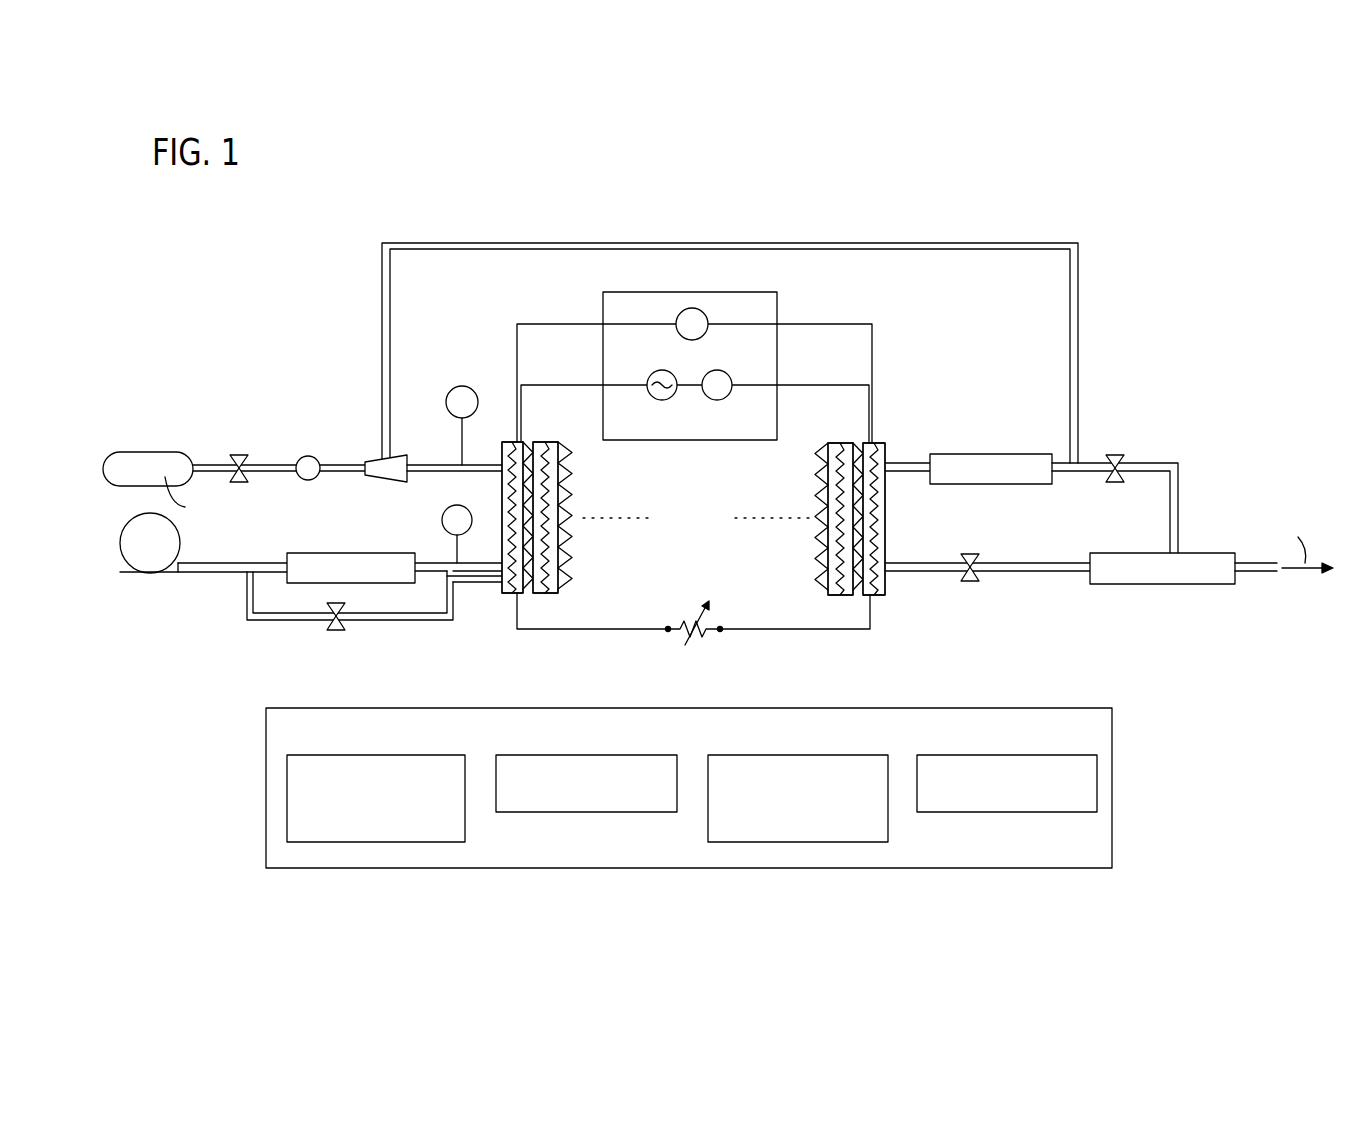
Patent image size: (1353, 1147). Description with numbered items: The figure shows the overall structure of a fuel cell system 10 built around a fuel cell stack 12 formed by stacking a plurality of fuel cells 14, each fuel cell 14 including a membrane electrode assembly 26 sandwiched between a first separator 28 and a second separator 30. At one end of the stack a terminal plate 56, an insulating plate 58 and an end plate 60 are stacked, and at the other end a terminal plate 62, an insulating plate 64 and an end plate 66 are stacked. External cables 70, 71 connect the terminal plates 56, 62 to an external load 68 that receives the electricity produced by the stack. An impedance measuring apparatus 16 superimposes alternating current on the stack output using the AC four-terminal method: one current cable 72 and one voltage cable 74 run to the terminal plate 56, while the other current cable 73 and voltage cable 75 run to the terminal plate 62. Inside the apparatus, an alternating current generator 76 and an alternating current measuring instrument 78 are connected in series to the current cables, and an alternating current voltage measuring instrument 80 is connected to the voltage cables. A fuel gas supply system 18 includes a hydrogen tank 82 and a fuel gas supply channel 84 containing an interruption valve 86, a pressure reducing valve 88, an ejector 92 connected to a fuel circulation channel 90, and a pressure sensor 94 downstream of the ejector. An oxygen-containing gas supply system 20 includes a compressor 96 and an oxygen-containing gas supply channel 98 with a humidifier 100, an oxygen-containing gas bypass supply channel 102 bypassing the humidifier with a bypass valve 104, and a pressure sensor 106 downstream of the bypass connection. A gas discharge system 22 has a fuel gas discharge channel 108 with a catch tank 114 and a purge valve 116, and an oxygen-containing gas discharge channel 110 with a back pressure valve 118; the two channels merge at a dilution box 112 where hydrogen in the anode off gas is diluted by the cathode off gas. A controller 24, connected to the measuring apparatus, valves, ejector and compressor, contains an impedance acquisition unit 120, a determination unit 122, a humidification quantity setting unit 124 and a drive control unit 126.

The fuel cell system 10 is at (238, 231).
The fuel cell stack 12 is at (886, 406).
The fuel cell 14 is at (693, 514).
The impedance measuring apparatus 16 is at (785, 288).
The fuel gas supply system 18 is at (211, 424).
The oxygen-containing gas supply system 20 is at (259, 627).
The gas discharge system 22 is at (1151, 427).
The controller 24 is at (995, 707).
The membrane electrode assembly 26 is at (550, 436).
The first separator 28 is at (568, 442).
The second separator 30 is at (523, 442).
The terminal plate 56 is at (888, 583).
The insulating plate 58 is at (888, 538).
The end plate 60 is at (888, 507).
The terminal plate 62 is at (502, 587).
The insulating plate 64 is at (502, 550).
The end plate 66 is at (502, 485).
The external load 68 is at (705, 640).
The external cable 70 is at (762, 630).
The external cable 71 is at (628, 630).
The current cable 72 is at (795, 385).
The current cable 73 is at (547, 385).
The voltage cable 74 is at (848, 324).
The voltage cable 75 is at (571, 324).
The alternating current generator 76 is at (659, 399).
The alternating current measuring instrument 78 is at (718, 399).
The alternating current voltage measuring instrument 80 is at (689, 339).
The hydrogen tank 82 is at (146, 451).
The fuel gas supply channel 84 is at (271, 463).
The interruption valve 86 is at (237, 455).
The pressure reducing valve 88 is at (308, 456).
The fuel circulation channel 90 is at (482, 242).
The ejector 92 is at (368, 460).
The pressure sensor 94 is at (462, 386).
The compressor 96 is at (153, 574).
The oxygen-containing gas supply channel 98 is at (210, 573).
The humidifier 100 is at (342, 553).
The oxygen-containing gas bypass supply channel 102 is at (407, 621).
The bypass valve 104 is at (337, 631).
The pressure sensor 106 is at (444, 508).
The fuel gas discharge channel 108 is at (912, 463).
The oxygen-containing gas discharge channel 110 is at (1012, 563).
The dilution box 112 is at (1188, 585).
The catch tank 114 is at (979, 454).
The purge valve 116 is at (1114, 455).
The back pressure valve 118 is at (970, 554).
The impedance acquisition unit 120 is at (370, 754).
The determination unit 122 is at (555, 754).
The humidification quantity setting unit 124 is at (810, 754).
The drive control unit 126 is at (993, 754).